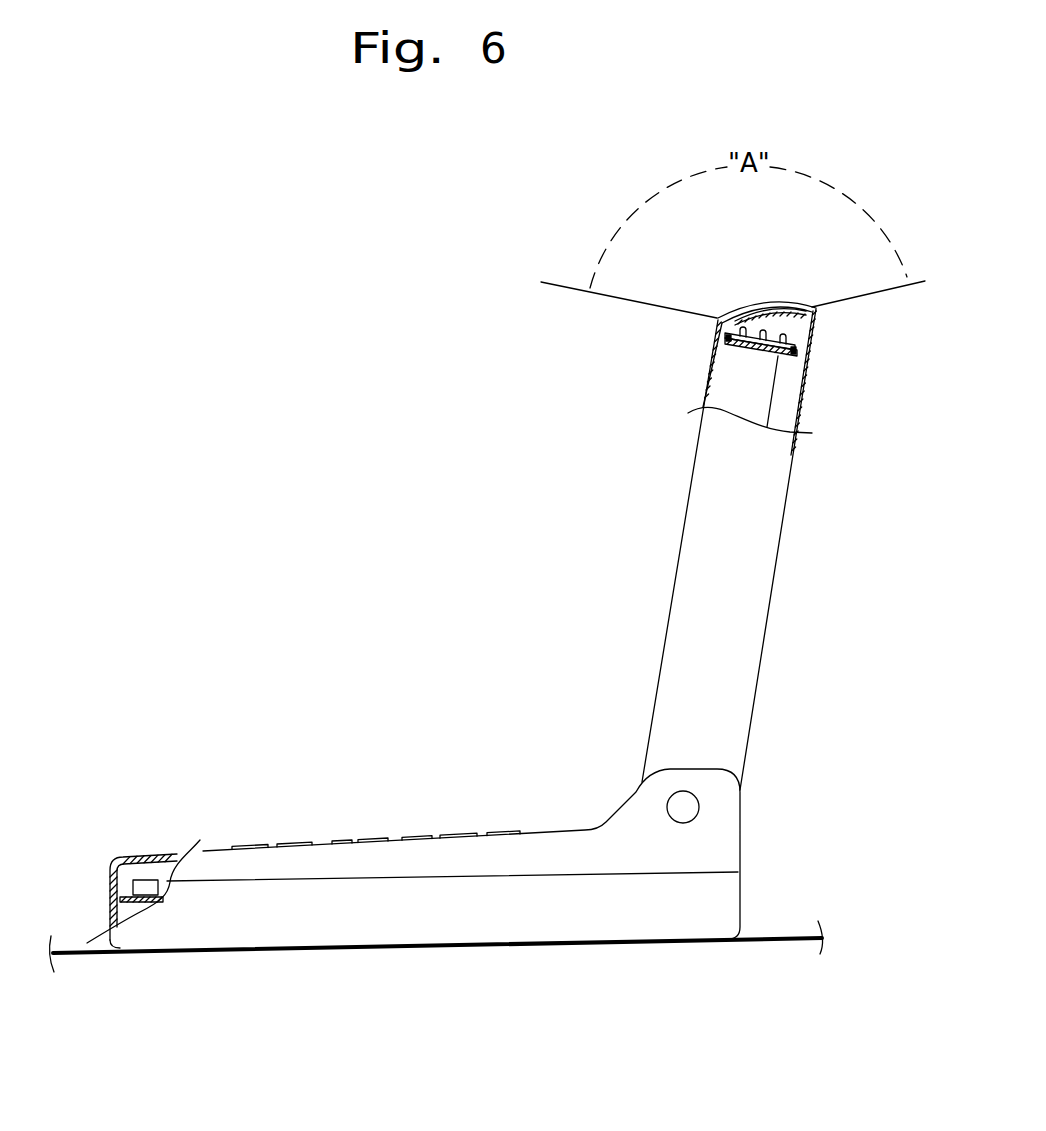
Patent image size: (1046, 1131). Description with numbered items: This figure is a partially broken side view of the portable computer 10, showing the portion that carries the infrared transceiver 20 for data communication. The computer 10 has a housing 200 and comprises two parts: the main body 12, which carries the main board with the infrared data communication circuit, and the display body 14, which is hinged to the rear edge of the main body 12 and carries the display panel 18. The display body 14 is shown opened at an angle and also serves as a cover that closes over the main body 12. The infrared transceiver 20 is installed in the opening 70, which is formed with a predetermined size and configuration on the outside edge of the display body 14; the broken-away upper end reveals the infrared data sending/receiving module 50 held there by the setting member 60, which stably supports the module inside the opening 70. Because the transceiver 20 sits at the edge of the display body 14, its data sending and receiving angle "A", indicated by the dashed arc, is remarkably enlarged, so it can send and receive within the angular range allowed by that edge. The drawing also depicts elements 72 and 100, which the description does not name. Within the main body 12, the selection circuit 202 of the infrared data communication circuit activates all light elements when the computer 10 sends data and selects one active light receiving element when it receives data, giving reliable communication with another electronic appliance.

The portable computer 10 is at (305, 436).
The main body 12 is at (296, 818).
The display body 14 is at (673, 457).
The display panel 18 is at (723, 384).
The infrared transceiver 20 is at (775, 297).
The infrared data sending/receiving module 50 is at (798, 332).
The setting member 60 is at (801, 358).
The opening 70 is at (717, 327).
The cap lining 72 is at (737, 308).
The mounting plate 100 is at (127, 893).
The housing 200 is at (431, 704).
The selection circuit 202 is at (143, 880).